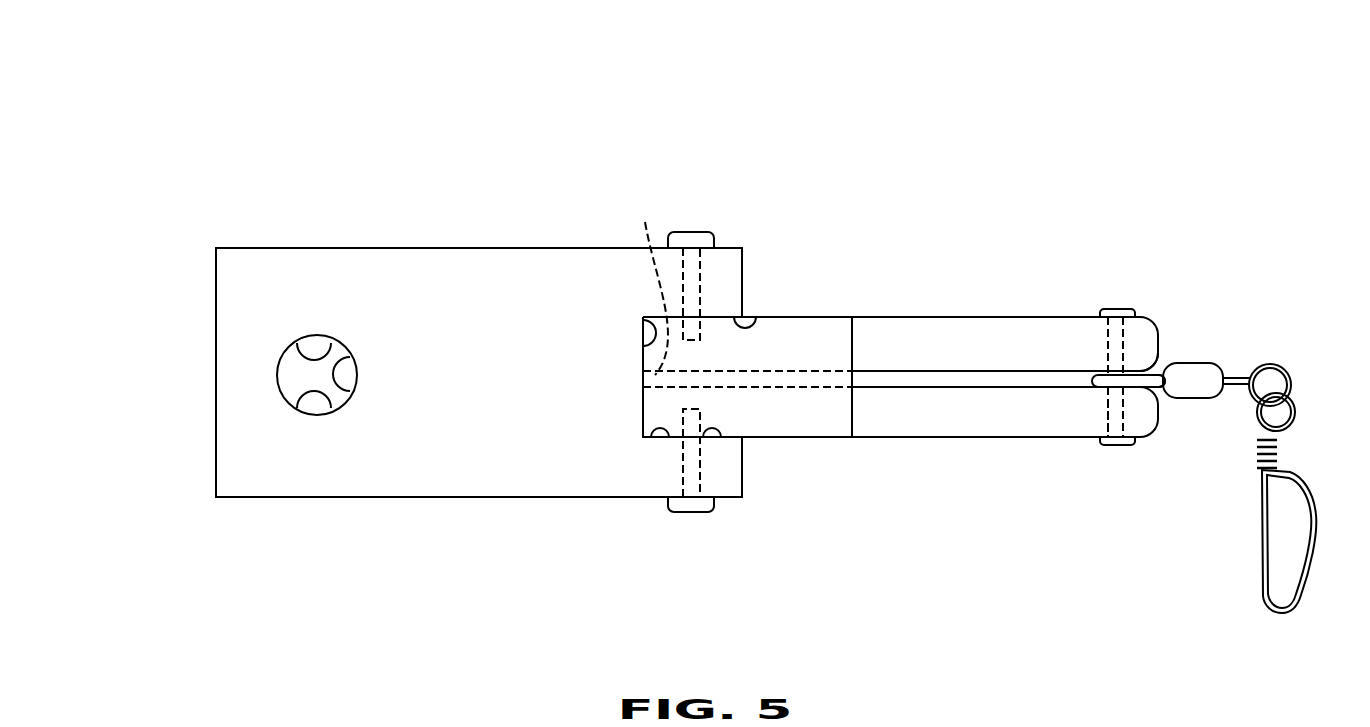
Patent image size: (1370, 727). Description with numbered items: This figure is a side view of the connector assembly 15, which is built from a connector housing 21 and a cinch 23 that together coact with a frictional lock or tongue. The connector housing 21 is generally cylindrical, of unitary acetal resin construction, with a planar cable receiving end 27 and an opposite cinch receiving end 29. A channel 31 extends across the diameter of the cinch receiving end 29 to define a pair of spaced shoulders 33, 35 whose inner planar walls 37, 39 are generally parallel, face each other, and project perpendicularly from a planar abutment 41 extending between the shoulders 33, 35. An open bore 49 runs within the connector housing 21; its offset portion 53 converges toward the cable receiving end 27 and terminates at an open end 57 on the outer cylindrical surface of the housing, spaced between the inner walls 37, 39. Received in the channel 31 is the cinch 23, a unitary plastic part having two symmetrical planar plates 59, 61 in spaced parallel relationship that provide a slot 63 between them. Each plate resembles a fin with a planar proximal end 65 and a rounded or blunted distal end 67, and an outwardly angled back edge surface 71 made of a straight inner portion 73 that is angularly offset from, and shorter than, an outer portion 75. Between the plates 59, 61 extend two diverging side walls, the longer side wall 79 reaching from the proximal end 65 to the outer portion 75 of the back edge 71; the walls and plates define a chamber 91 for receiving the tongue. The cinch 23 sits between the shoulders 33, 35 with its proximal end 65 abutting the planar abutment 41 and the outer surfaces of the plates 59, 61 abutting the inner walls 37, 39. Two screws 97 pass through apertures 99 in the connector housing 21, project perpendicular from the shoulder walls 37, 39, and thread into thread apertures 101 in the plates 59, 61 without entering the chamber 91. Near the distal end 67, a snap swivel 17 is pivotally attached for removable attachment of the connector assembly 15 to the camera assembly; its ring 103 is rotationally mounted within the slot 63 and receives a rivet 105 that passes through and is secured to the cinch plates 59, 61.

The connector assembly 15 is at (1066, 135).
The snap swivel 17 is at (1302, 408).
The connector housing 21 is at (476, 272).
The cinch 23 is at (958, 322).
The cable receiving end 27 is at (216, 458).
The cinch receiving end 29 is at (742, 273).
The channel 31 is at (643, 417).
The shoulder 33 is at (728, 258).
The shoulder 35 is at (727, 475).
The inner planar wall 37 is at (760, 317).
The inner planar wall 39 is at (721, 440).
The planar abutment 41 is at (643, 317).
The open bore 49 is at (333, 412).
The offset portion 53 is at (335, 342).
The open end 57 is at (357, 387).
The planar plate 59 is at (1022, 322).
The planar plate 61 is at (997, 427).
The slot 63 is at (913, 388).
The proximal end 65 is at (642, 417).
The distal end 67 is at (1163, 345).
The back edge surface 71 is at (902, 322).
The inner portion 73 is at (803, 428).
The outer portion 75 is at (1075, 338).
The side wall 79 is at (795, 377).
The chamber 91 is at (648, 284).
The screw 97 is at (689, 230).
The aperture 99 is at (682, 477).
The thread aperture 101 is at (700, 328).
The ring 103 is at (1145, 393).
The rivet 105 is at (1107, 412).